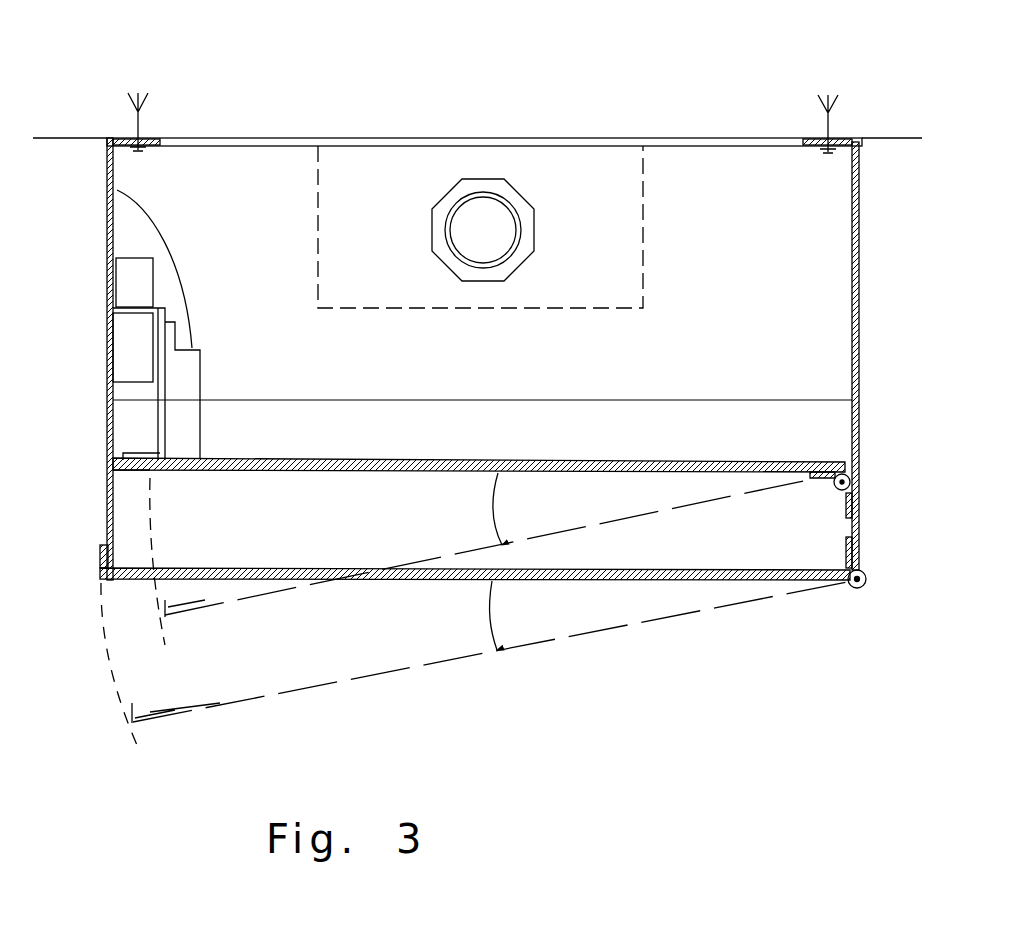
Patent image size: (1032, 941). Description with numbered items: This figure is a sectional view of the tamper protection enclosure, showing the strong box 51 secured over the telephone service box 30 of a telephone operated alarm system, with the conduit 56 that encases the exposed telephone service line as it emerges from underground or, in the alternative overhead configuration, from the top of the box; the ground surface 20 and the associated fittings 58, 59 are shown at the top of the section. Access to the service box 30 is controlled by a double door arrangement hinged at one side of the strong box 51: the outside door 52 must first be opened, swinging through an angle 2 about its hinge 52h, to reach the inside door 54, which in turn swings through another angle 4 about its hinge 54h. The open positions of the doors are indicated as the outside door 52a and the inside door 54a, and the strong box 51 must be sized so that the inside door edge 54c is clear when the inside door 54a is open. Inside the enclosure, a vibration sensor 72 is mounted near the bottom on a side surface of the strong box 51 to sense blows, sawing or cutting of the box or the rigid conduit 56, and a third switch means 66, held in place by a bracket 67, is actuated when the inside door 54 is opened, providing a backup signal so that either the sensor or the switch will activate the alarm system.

The ground surface 20 is at (65, 137).
The antenna 59 is at (140, 123).
The antenna 58 is at (815, 140).
The telephone service box 30 is at (317, 220).
The conduit 56 is at (505, 192).
The third switch means 66 is at (113, 213).
The vibration sensor 72 is at (140, 257).
The bracket 67 is at (142, 307).
The strong box 51 is at (108, 355).
The inside door 54 is at (647, 472).
The hinge 54h is at (850, 482).
The inside door 54a is at (615, 522).
The inside door edge 54c is at (152, 472).
The outside door 52 is at (545, 582).
The hinge 52h is at (863, 588).
The outside door 52a is at (520, 647).
The angle 4 is at (488, 509).
The angle 2 is at (485, 615).